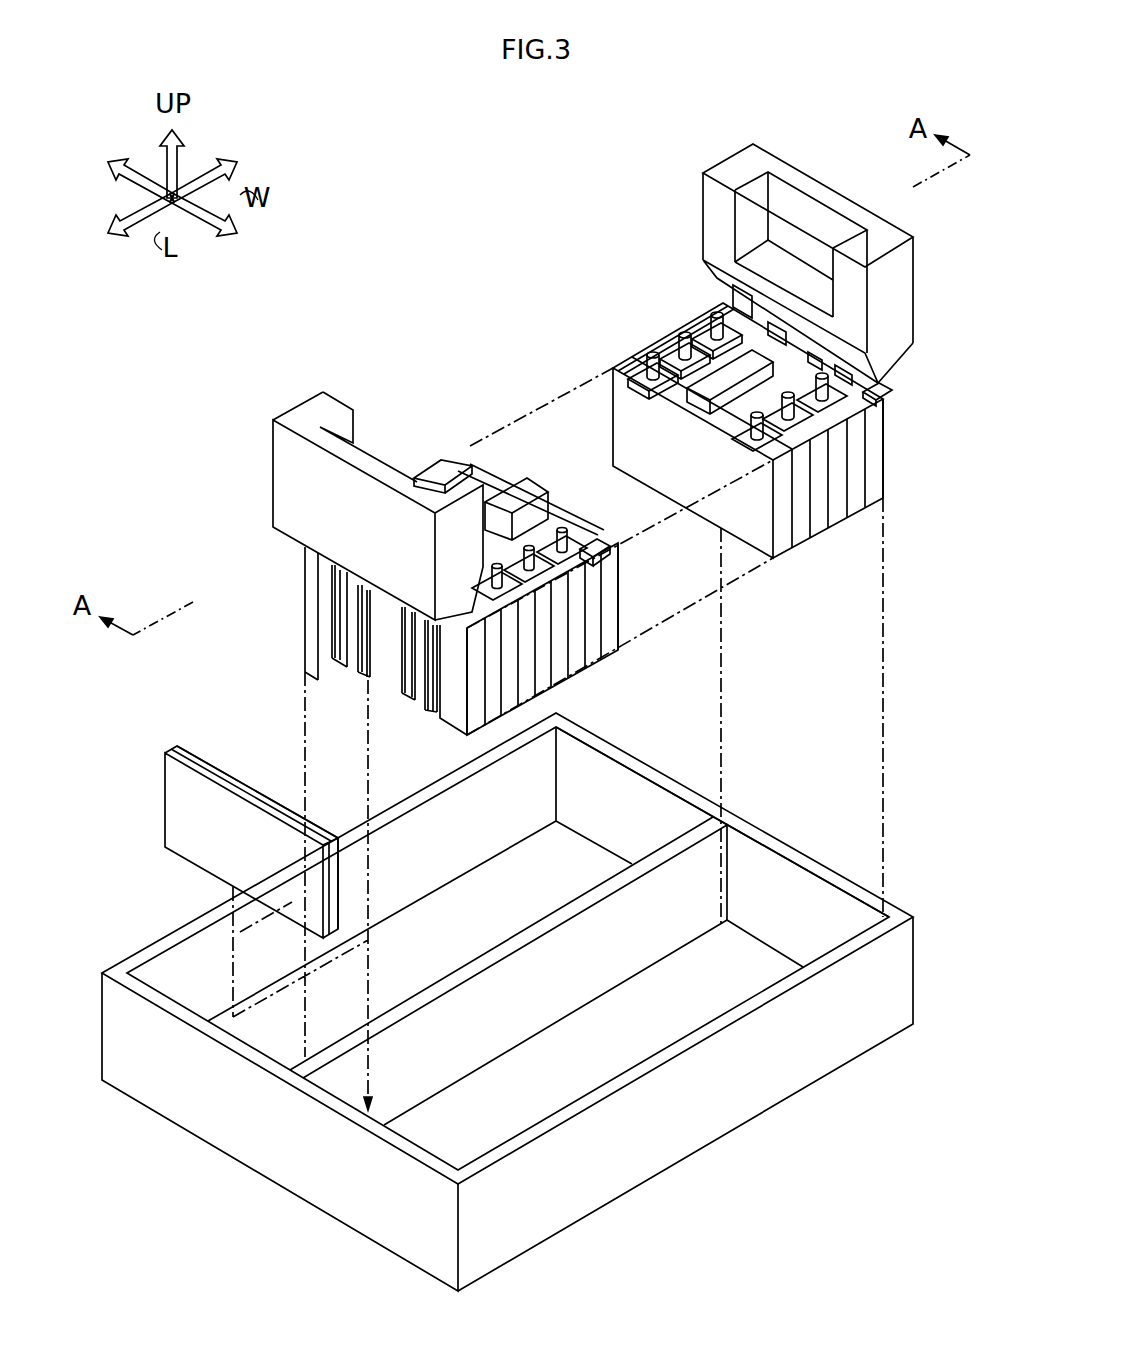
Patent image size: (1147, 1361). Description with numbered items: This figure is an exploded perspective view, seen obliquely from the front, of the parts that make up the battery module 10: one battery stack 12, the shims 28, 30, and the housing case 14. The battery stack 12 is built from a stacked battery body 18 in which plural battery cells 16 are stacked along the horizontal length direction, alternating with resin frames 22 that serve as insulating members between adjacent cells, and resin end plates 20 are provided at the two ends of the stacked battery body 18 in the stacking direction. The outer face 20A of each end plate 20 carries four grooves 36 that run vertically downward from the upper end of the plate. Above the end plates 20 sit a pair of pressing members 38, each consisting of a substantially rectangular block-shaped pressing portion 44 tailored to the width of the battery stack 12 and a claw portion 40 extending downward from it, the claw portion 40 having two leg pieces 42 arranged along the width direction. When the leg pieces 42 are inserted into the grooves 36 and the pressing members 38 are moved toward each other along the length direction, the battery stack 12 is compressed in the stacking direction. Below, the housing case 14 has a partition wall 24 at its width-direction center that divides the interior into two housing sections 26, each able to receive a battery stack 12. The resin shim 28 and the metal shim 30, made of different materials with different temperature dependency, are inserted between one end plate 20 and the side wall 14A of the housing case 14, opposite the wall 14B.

The battery module 10 is at (170, 366).
The battery stack 12 is at (518, 360).
The housing case 14 is at (708, 1146).
The side wall 14A is at (265, 1160).
The rear side wall of case 14B is at (757, 862).
The battery cell 16 is at (560, 655).
The stacked battery body 18 is at (785, 558).
The end plate 20 is at (880, 480).
The outer face 20A is at (360, 660).
The resin frame 22 is at (612, 634).
The partition wall 24 is at (628, 890).
The housing section 26 is at (497, 904).
The shim 28 is at (185, 791).
The shim 30 is at (197, 752).
The groove 36 is at (335, 645).
The pressing member 38 is at (818, 178).
The claw portion 40 is at (330, 575).
The leg piece 42 is at (428, 640).
The pressing portion 44 is at (918, 278).